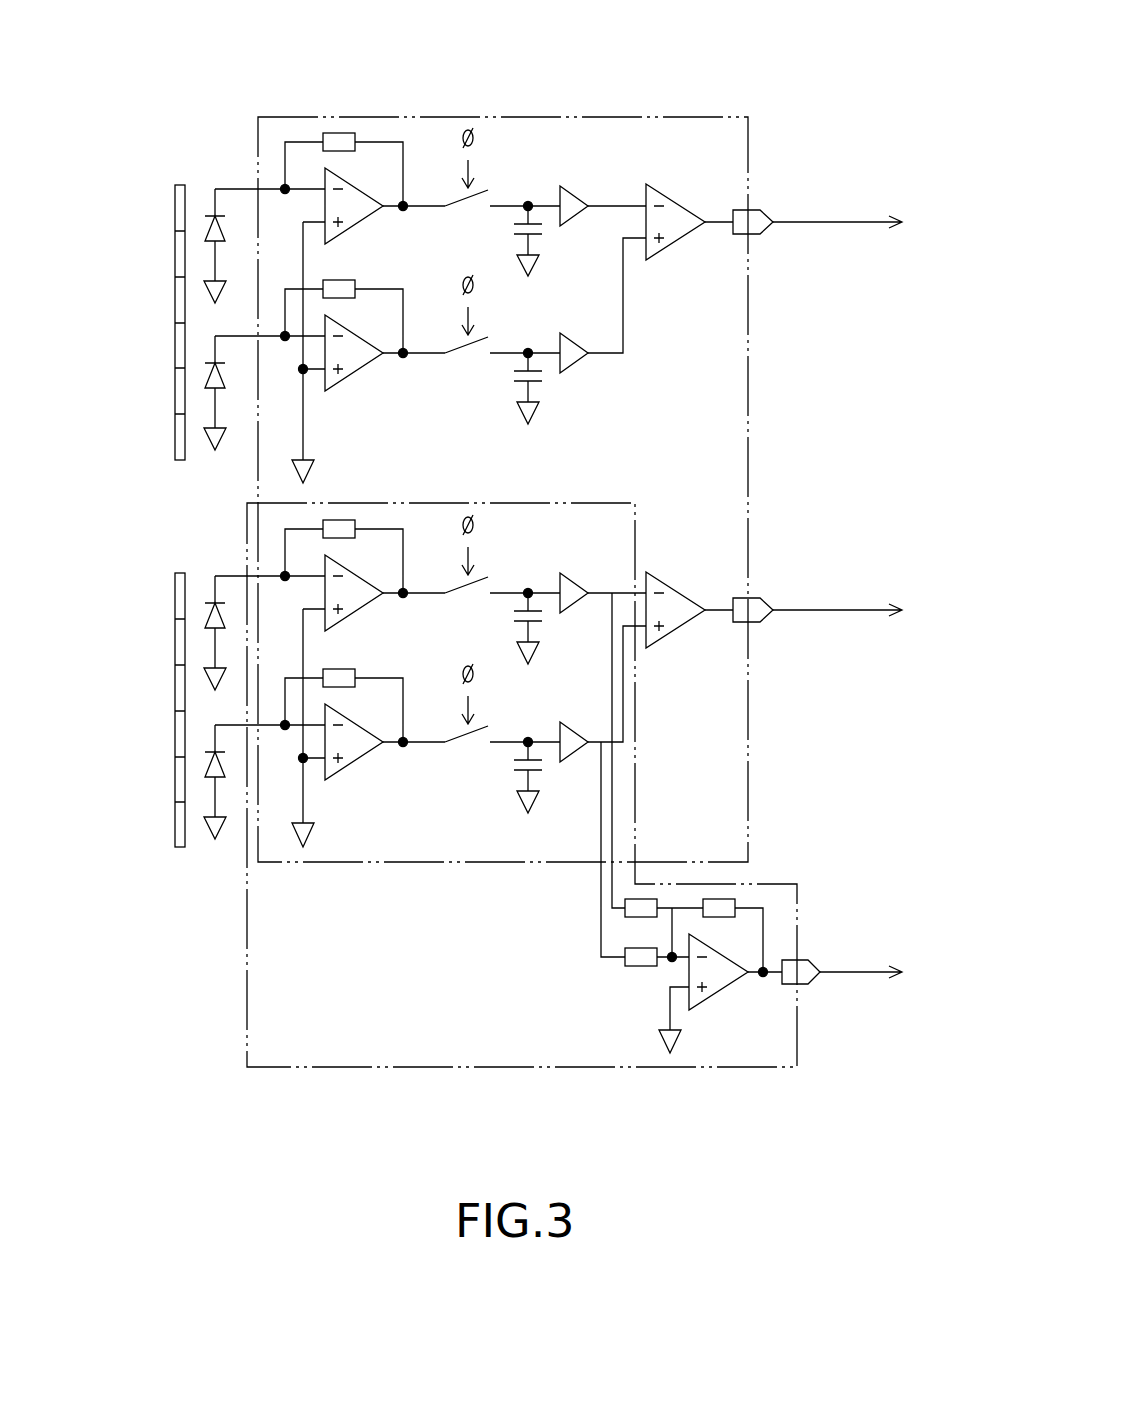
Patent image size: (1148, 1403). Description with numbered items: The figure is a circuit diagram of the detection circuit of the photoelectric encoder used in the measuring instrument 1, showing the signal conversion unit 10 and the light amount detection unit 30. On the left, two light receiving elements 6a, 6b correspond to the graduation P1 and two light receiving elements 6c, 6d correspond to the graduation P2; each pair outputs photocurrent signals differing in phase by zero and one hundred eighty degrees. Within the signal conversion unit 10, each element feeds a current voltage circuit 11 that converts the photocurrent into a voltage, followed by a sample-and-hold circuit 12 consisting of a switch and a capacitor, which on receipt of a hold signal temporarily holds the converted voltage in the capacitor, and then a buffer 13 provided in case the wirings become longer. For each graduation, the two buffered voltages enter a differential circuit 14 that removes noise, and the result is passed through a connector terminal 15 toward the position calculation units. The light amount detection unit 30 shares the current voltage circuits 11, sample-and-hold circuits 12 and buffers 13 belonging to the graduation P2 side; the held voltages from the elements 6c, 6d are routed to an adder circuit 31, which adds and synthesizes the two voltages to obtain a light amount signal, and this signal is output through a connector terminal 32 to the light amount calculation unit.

The measuring instrument 1 is at (898, 80).
The light receiving element 6a is at (200, 228).
The light receiving element 6b is at (195, 390).
The light receiving element 6c is at (200, 607).
The light receiving element 6d is at (195, 780).
The graduation P1 is at (178, 183).
The graduation P2 is at (183, 850).
The signal conversion unit 10 is at (657, 117).
The current voltage circuit 11 is at (373, 106).
The sample-and-hold circuit 12 is at (480, 228).
The buffer 13 is at (574, 218).
The differential circuit 14 is at (675, 240).
The connector terminal 15 is at (757, 235).
The light amount detection unit 30 is at (657, 1067).
The adder circuit 31 is at (648, 988).
The connector terminal 32 is at (812, 985).